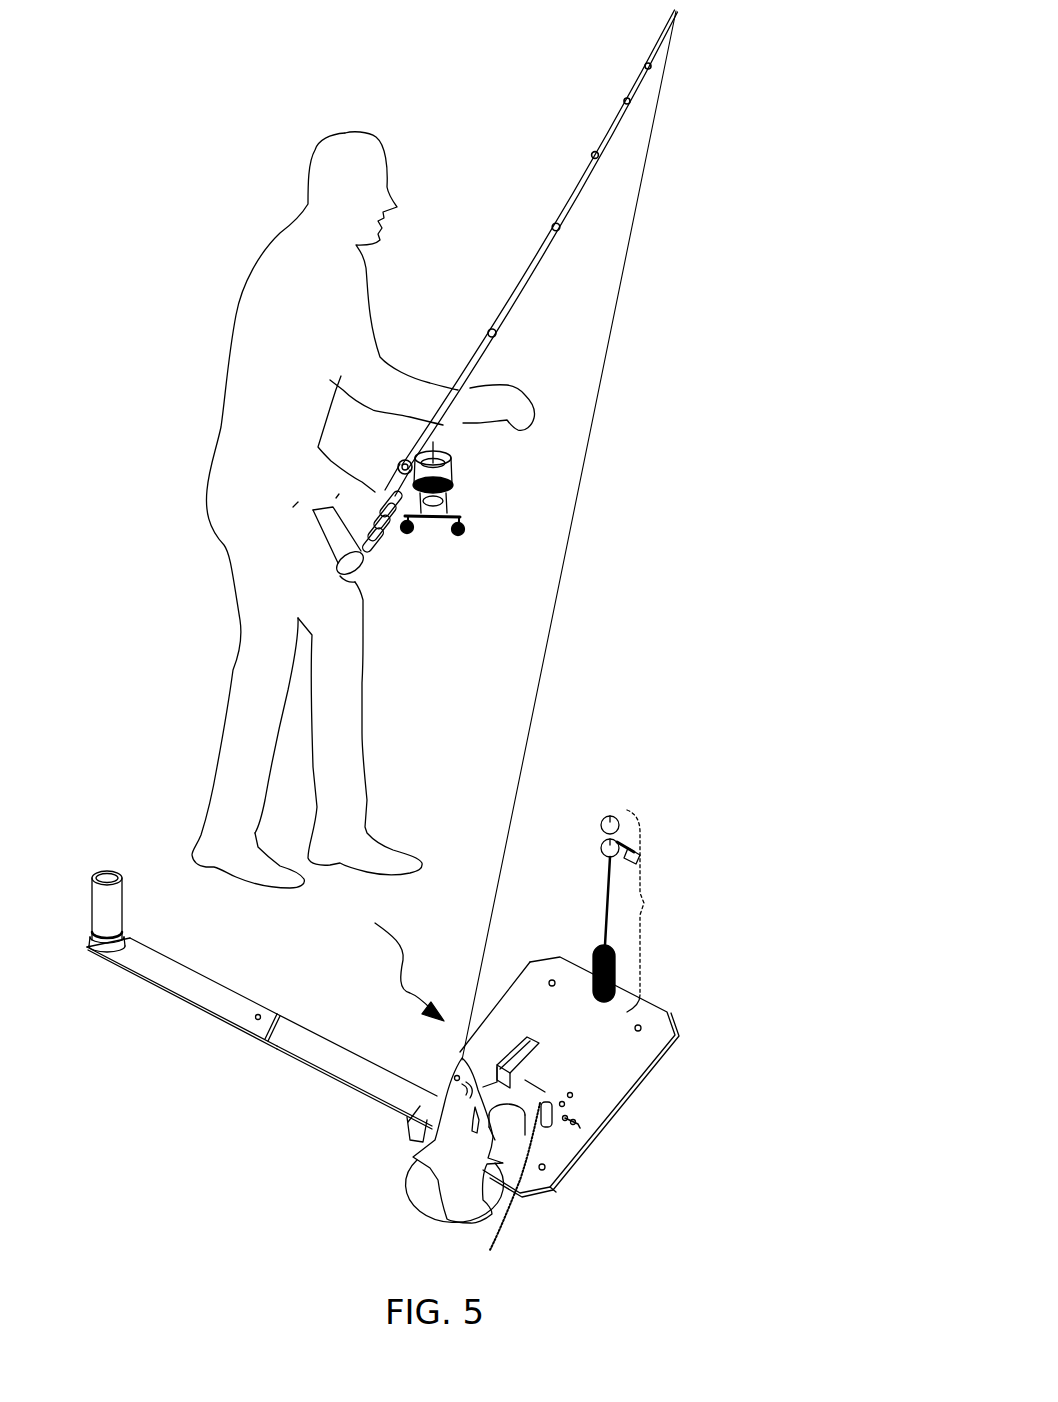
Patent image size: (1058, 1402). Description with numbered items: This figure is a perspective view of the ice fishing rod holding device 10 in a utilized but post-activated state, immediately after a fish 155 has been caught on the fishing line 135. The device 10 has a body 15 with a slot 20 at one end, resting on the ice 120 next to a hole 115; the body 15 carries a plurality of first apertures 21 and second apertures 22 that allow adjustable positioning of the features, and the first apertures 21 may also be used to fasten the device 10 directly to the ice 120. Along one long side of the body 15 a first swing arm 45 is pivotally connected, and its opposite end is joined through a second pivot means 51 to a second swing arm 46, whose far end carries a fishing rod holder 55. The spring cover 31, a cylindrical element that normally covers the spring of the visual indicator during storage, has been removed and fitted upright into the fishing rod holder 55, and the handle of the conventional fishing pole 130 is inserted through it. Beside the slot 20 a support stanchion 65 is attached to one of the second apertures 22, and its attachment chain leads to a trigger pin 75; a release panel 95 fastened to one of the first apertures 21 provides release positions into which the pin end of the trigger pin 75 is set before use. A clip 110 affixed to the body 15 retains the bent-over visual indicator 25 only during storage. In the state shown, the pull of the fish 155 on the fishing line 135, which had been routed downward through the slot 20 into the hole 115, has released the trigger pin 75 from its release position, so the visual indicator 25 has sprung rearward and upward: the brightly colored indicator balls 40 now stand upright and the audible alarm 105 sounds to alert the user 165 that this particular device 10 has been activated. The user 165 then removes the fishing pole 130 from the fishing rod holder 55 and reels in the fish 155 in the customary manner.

The ice fishing rod holding device 10 is at (397, 958).
The body 15 is at (633, 1052).
The slot 20 is at (503, 1130).
The first apertures 21 is at (552, 983).
The second apertures 22 is at (565, 1118).
The visual indicator 25 is at (658, 908).
The spring cover 31 is at (107, 908).
The indicator balls 40 is at (605, 820).
The first swing arm 45 is at (347, 1073).
The second swing arm 46 is at (190, 985).
The second pivot means 51 is at (253, 1023).
The fishing rod holder 55 is at (113, 947).
The support stanchion 65 is at (570, 1132).
The trigger pin 75 is at (577, 1120).
The release panel 95 is at (520, 1065).
The audible alarm 105 is at (633, 857).
The clip 110 is at (545, 1080).
The hole 115 is at (428, 1195).
The ice 120 is at (605, 1217).
The fishing pole 130 is at (597, 140).
The fishing line 135 is at (540, 664).
The fish 155 is at (438, 1095).
The user 165 is at (275, 335).